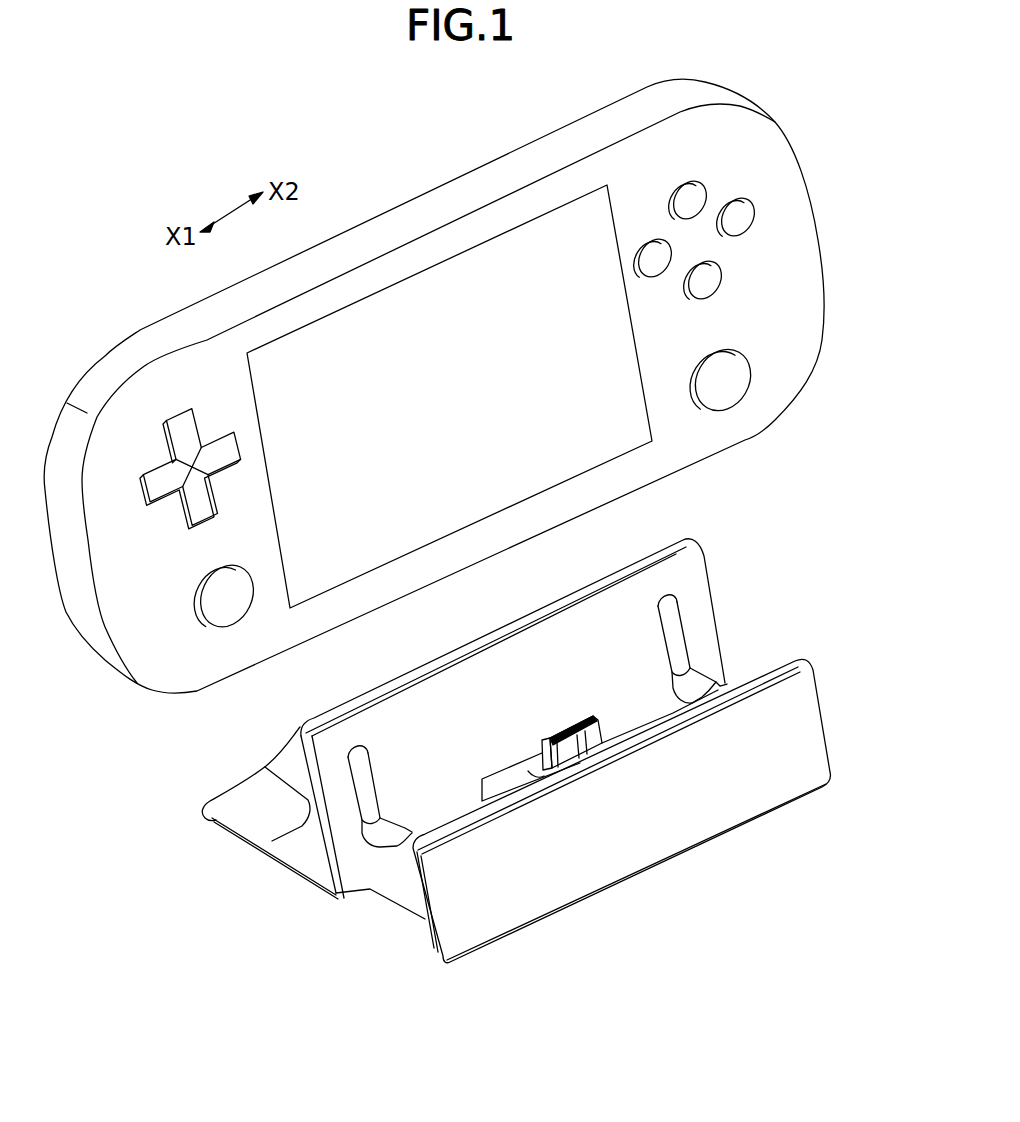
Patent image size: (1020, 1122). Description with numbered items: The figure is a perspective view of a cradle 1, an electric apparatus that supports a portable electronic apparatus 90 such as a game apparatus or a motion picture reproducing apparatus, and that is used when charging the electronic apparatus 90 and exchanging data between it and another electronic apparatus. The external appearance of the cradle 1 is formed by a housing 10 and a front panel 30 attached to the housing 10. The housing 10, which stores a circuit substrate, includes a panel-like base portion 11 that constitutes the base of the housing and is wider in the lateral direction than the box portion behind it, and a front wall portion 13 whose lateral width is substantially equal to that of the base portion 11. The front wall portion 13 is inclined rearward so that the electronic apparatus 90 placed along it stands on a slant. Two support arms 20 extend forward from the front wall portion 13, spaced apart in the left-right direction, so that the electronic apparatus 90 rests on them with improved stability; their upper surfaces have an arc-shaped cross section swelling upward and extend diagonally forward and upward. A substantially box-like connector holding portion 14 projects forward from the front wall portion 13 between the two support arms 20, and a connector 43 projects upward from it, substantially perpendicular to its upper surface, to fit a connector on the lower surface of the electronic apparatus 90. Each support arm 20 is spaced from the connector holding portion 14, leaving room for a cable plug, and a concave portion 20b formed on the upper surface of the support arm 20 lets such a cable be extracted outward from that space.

The cradle 1 is at (708, 859).
The housing 10 is at (531, 751).
The base portion 11 is at (235, 810).
The front wall portion 13 is at (490, 672).
The connector holding portion 14 is at (518, 768).
The support arm 20 is at (554, 762).
The concave portion 20b is at (375, 838).
The front panel 30 is at (810, 730).
The connector 43 is at (585, 743).
The portable electronic apparatus 90 is at (389, 207).